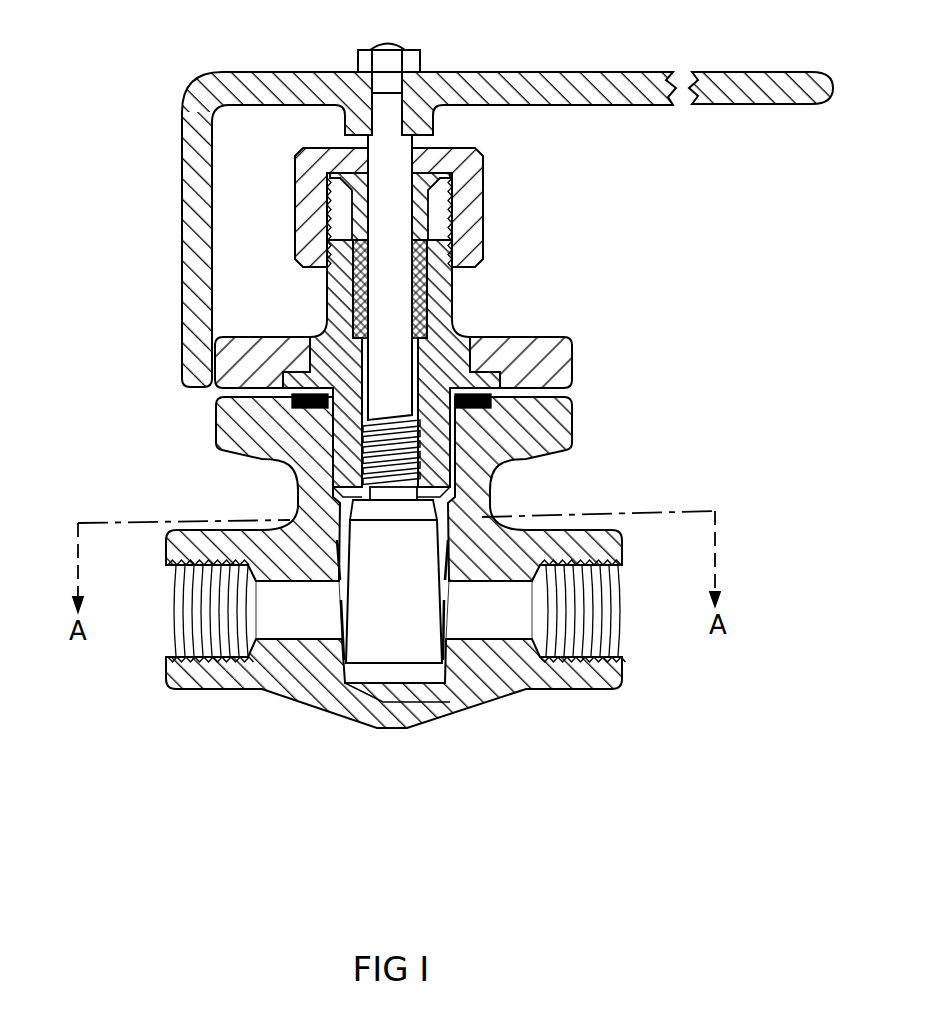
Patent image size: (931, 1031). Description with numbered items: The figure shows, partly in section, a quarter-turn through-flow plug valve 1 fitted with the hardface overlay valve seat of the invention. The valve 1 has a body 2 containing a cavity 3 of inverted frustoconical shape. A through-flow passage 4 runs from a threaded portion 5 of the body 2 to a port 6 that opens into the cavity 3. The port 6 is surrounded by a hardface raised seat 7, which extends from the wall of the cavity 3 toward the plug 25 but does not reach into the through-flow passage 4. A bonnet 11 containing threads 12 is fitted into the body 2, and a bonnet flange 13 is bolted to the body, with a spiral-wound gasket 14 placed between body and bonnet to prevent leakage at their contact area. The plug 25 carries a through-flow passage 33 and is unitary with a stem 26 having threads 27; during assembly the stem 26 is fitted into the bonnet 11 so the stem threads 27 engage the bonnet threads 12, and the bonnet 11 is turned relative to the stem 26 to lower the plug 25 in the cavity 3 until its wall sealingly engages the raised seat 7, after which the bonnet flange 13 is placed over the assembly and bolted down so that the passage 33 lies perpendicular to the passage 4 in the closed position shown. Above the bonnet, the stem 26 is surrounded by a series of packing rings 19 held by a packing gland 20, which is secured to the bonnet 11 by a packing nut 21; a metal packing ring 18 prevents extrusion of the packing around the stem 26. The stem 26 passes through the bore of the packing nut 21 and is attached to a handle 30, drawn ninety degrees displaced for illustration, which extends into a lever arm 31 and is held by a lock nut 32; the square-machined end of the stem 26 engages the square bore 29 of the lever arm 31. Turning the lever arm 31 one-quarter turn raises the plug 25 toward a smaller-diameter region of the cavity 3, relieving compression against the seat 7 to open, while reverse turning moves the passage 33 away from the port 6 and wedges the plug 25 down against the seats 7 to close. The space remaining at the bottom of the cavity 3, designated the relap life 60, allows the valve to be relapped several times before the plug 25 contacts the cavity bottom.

The valve 1 is at (148, 90).
The body 2 is at (610, 548).
The cavity 3 is at (440, 534).
The through-flow passage 4 is at (288, 622).
The threaded portion 5 is at (183, 619).
The port 6 is at (342, 600).
The hardface raised seat 7 is at (349, 651).
The bonnet 11 is at (447, 342).
The bonnet threads 12 is at (362, 466).
The bonnet flange 13 is at (556, 355).
The spiral-wound gasket 14 is at (481, 392).
The metal packing ring 18 is at (356, 327).
The packing rings 19 is at (432, 293).
The packing gland 20 is at (421, 182).
The packing nut 21 is at (303, 170).
The plug 25 is at (408, 582).
The stem 26 is at (404, 370).
The stem threads 27 is at (428, 469).
The square bore 29 is at (381, 110).
The handle 30 is at (192, 228).
The lever arm 31 is at (549, 80).
The lock nut 32 is at (412, 62).
The plug through-flow passage 33 is at (376, 630).
The relap life 60 is at (428, 670).